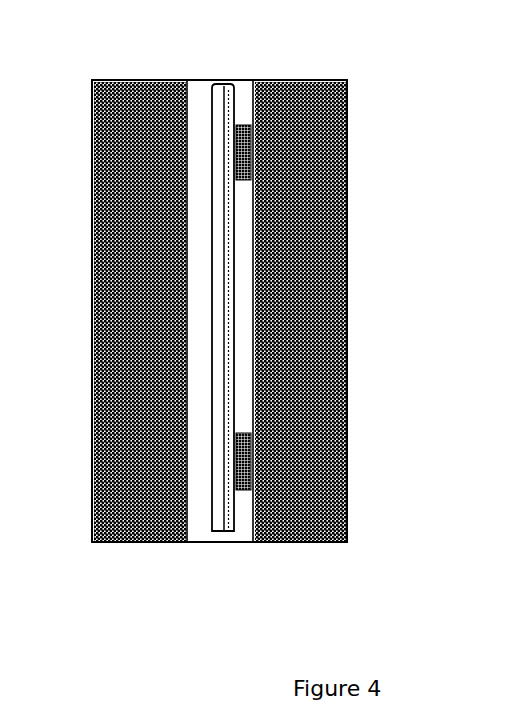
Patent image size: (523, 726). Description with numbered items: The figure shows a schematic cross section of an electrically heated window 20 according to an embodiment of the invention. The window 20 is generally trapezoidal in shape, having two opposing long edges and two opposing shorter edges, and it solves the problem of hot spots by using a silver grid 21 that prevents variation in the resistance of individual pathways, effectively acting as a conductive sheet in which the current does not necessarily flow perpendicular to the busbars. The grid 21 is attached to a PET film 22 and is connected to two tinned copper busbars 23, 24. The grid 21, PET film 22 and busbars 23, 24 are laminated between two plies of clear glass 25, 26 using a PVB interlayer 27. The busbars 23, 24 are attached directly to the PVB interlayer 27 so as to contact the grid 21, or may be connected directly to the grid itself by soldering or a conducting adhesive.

The electrically heated window 20 is at (400, 292).
The silver grid 21 is at (223, 92).
The PET film 22 is at (207, 93).
The tinned copper busbar 23 is at (233, 148).
The tinned copper busbar 24 is at (243, 457).
The ply of clear glass 25 is at (298, 467).
The ply of clear glass 26 is at (128, 470).
The PVB interlayer 27 is at (237, 222).